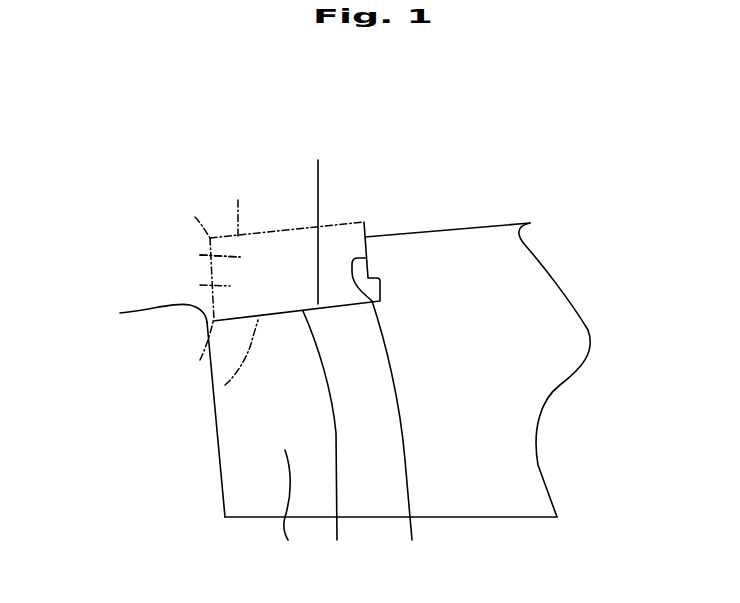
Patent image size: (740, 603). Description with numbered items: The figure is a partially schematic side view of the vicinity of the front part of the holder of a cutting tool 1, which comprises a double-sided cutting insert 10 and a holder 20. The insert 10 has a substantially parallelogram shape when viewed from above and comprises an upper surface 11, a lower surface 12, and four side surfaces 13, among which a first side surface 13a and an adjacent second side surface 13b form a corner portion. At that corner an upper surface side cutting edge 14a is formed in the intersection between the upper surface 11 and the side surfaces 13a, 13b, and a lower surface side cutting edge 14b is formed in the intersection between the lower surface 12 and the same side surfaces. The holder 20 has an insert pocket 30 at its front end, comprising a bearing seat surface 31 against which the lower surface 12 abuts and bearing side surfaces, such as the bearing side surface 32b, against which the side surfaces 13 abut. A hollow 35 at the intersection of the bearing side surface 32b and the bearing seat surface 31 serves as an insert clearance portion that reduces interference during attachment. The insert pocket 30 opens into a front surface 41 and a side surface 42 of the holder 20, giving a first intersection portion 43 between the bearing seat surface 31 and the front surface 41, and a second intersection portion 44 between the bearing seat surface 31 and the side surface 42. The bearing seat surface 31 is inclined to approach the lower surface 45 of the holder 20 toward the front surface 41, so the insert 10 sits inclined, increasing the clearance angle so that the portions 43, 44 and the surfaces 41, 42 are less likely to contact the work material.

The cutting tool 1 is at (468, 110).
The double-sided cutting insert 10 is at (341, 232).
The upper surface 11 is at (238, 200).
The lower surface 12 is at (225, 385).
The side surface 13 is at (98, 233).
The first side surface 13a is at (200, 285).
The second side surface 13b is at (200, 255).
The upper surface side cutting edge 14a is at (195, 217).
The lower surface side cutting edge 14b is at (200, 360).
The holder 20 is at (403, 240).
The insert pocket 30 is at (285, 310).
The bearing seat surface 31 is at (318, 160).
The bearing side surface 32b is at (403, 434).
The hollow 35 is at (380, 290).
The front surface 41 is at (220, 453).
The side surface 42 is at (290, 508).
The first intersection portion 43 is at (120, 313).
The second intersection portion 44 is at (326, 439).
The lower surface 45 is at (248, 517).